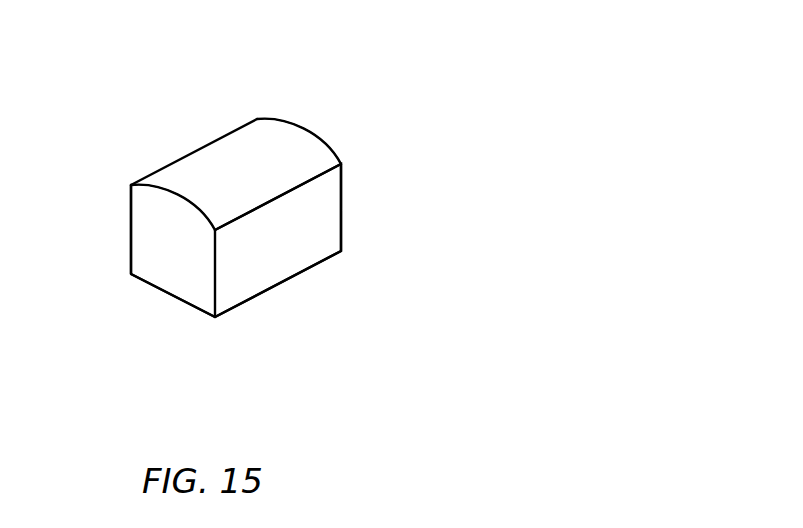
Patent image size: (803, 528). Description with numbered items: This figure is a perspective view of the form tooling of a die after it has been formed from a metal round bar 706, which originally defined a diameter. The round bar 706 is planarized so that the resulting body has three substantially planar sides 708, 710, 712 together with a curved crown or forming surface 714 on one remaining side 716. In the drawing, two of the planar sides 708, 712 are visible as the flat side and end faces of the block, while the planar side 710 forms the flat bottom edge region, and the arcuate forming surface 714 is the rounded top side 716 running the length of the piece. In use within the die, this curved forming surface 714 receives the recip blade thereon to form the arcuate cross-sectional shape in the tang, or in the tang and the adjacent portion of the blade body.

The metal round bar 706 is at (391, 111).
The planar side 708 is at (297, 225).
The planar side 710 is at (178, 298).
The planar side 712 is at (131, 230).
The curved forming surface 714 is at (178, 190).
The side 716 is at (275, 152).